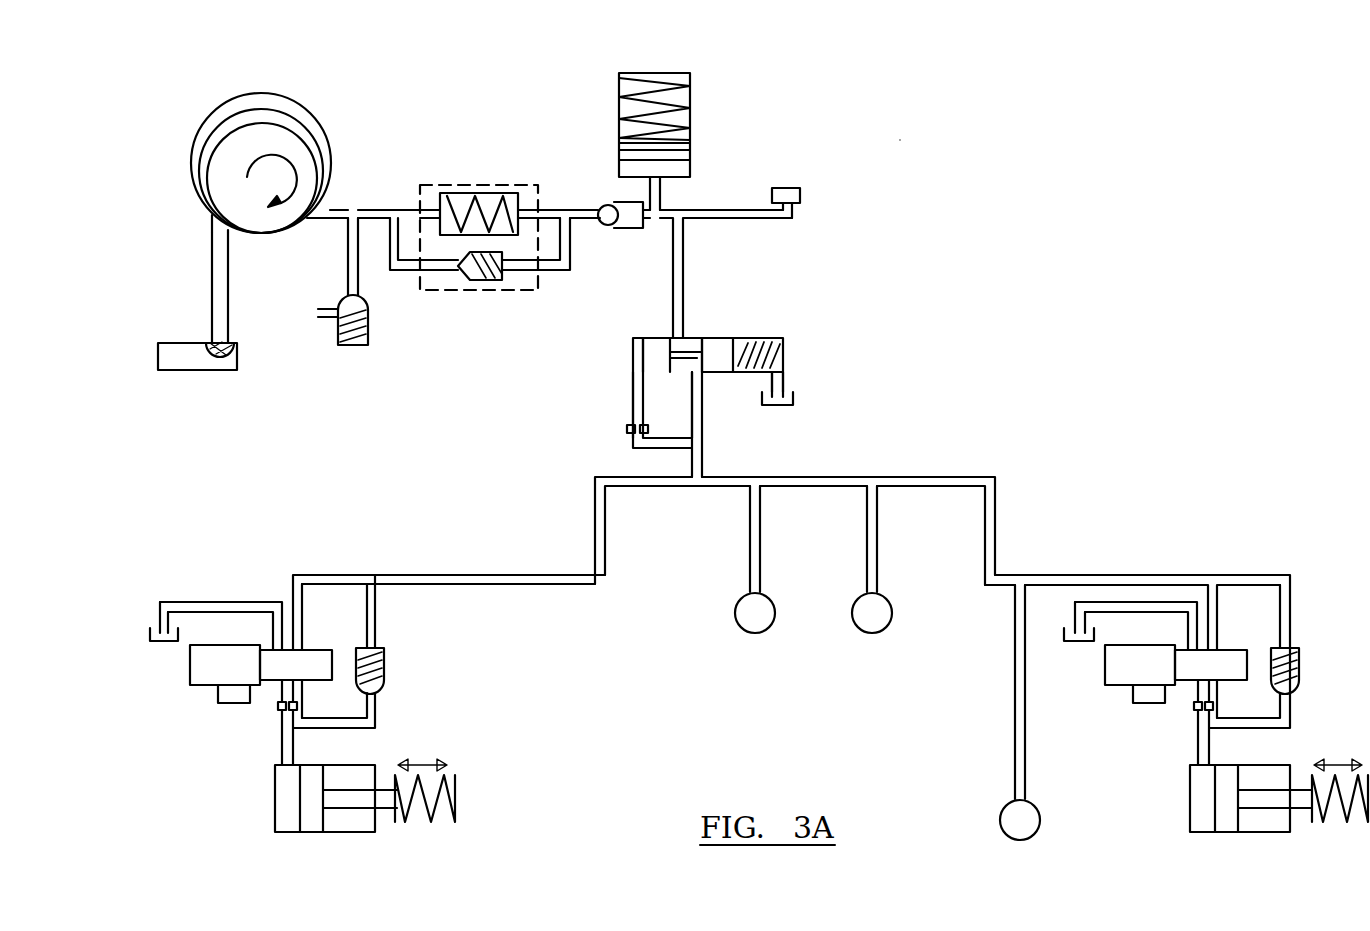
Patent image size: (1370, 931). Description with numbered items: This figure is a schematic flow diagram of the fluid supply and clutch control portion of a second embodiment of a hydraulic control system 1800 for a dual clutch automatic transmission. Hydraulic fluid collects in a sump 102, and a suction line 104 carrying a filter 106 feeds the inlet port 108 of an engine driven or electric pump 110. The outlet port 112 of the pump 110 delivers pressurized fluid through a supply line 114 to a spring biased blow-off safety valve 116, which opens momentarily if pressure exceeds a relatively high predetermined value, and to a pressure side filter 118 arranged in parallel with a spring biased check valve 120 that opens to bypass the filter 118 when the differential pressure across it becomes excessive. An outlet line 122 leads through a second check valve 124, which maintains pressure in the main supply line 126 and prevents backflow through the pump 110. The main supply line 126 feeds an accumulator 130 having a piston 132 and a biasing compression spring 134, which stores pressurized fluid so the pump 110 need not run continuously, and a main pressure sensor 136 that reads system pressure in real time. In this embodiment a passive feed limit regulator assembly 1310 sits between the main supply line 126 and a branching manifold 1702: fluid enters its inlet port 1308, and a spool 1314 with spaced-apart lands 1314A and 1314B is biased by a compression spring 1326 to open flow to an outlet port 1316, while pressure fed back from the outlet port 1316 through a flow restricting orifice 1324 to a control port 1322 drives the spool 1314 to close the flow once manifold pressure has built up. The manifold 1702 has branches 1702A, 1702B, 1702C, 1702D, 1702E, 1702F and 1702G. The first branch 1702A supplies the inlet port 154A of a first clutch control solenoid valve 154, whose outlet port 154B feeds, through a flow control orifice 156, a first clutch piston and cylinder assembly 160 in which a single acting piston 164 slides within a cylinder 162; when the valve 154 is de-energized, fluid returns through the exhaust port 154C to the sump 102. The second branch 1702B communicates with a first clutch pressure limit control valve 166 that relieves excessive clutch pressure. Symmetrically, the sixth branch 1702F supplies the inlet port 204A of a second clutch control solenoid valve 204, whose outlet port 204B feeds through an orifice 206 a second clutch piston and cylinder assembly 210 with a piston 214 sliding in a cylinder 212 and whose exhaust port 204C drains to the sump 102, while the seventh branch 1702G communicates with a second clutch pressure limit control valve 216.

The sump 102 is at (192, 366).
The suction line 104 is at (229, 258).
The filter 106 is at (215, 340).
The inlet port 108 is at (218, 224).
The pump 110 is at (283, 105).
The outlet port 112 is at (336, 205).
The supply line 114 is at (398, 210).
The blow-off safety valve 116 is at (366, 301).
The pressure side filter 118 is at (484, 210).
The check valve 120 is at (482, 282).
The outlet line 122 is at (563, 210).
The second check valve 124 is at (612, 226).
The main supply line 126 is at (672, 322).
The accumulator 130 is at (690, 112).
The piston 132 is at (668, 158).
The biasing compression spring 134 is at (647, 120).
The main pressure sensor 136 is at (788, 188).
The first clutch control solenoid valve 154 is at (200, 712).
The inlet port 154A is at (296, 650).
The outlet port 154B is at (290, 684).
The exhaust port 154C is at (272, 648).
The flow control orifice 156 is at (279, 712).
The first clutch piston and cylinder assembly 160 is at (483, 808).
The cylinder 162 is at (356, 834).
The single acting piston 164 is at (312, 822).
The first clutch pressure limit control valve 166 is at (380, 686).
The second clutch control solenoid valve 204 is at (1110, 695).
The inlet port 204A is at (1211, 650).
The outlet port 204B is at (1206, 684).
The exhaust port 204C is at (1186, 648).
The orifice 206 is at (1195, 712).
The second clutch piston and cylinder assembly 210 is at (1158, 799).
The cylinder 212 is at (1268, 834).
The single acting piston 214 is at (1228, 822).
The second clutch pressure limit control valve 216 is at (1300, 670).
The inlet port 1308 is at (678, 334).
The passive feed limit regulator assembly 1310 is at (806, 337).
The spool 1314 is at (700, 355).
The land 1314A is at (657, 357).
The land 1314B is at (713, 338).
The outlet port 1316 is at (697, 375).
The control port 1322 is at (636, 370).
The flow restricting orifice 1324 is at (626, 431).
The compression spring 1326 is at (752, 336).
The branching manifold 1702 is at (984, 480).
The first branch 1702A is at (293, 583).
The second branch 1702B is at (376, 616).
The third rail branch 1702C is at (762, 514).
The fourth rail branch 1702D is at (878, 514).
The fifth rail branch 1702E is at (1015, 724).
The sixth branch 1702F is at (1217, 587).
The seventh branch 1702G is at (1294, 580).
The hydraulic control system 1800 is at (957, 137).